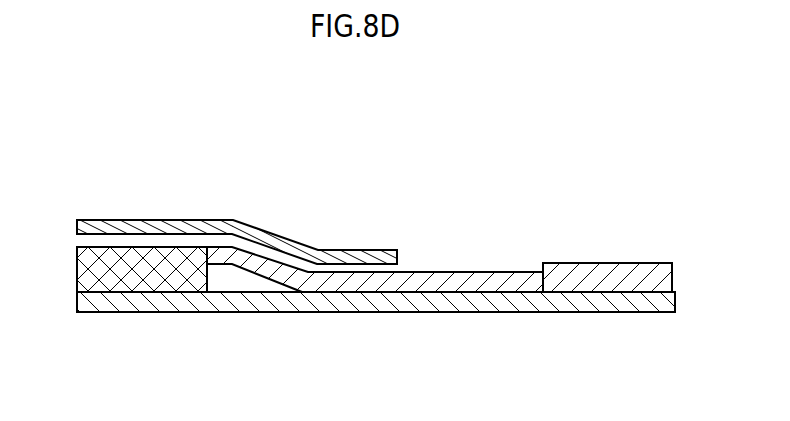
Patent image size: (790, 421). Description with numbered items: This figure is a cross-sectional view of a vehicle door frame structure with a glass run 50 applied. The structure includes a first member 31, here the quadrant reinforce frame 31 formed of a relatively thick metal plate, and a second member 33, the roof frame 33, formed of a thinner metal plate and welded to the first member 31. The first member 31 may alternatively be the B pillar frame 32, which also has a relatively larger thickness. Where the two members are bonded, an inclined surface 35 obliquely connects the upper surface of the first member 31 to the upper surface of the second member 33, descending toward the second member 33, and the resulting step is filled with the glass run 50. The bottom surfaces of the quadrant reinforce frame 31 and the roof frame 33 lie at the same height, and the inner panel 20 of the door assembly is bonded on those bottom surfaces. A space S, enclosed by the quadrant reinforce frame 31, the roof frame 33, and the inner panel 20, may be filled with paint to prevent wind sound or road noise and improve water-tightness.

The inner panel 20 is at (413, 297).
The first member 31 is at (94, 257).
The B pillar frame 32 is at (617, 273).
The second member 33 is at (466, 276).
The inclined surface 35 is at (292, 260).
The glass run 50 is at (270, 233).
The space S is at (225, 278).